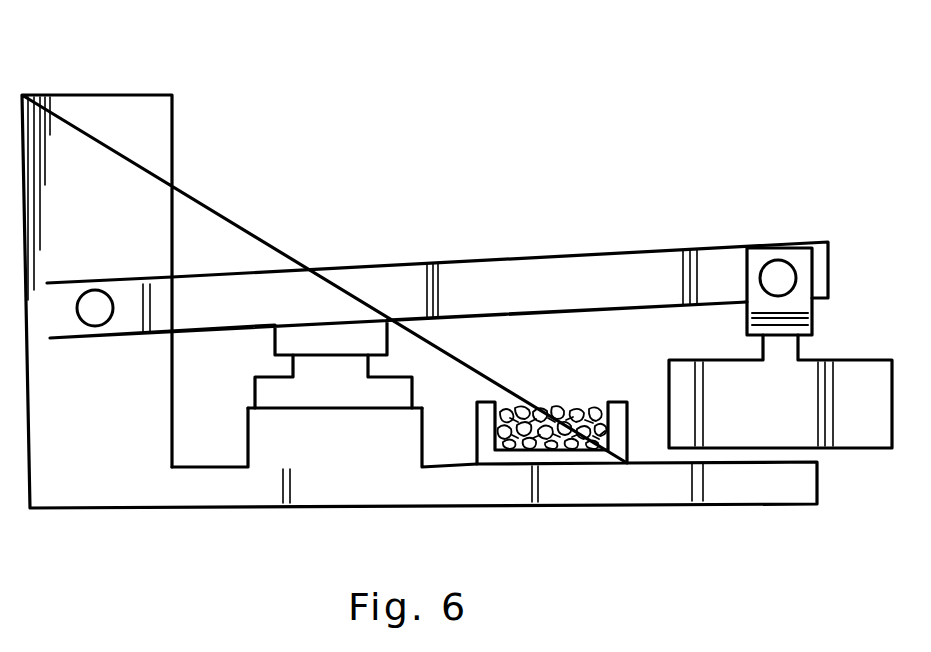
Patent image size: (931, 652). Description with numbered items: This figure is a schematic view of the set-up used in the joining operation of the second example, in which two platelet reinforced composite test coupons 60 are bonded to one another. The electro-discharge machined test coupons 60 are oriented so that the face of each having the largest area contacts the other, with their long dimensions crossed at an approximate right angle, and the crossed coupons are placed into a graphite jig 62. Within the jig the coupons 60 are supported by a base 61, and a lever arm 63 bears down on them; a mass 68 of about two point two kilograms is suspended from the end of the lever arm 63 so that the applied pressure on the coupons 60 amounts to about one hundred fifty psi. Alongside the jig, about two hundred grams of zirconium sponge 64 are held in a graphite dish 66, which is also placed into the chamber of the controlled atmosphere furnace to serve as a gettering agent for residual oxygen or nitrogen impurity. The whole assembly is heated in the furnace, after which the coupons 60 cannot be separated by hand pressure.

The test coupons 60 is at (340, 393).
The base 61 is at (113, 110).
The graphite jig 62 is at (323, 130).
The lever arm 63 is at (198, 293).
The zirconium sponge 64 is at (570, 410).
The graphite dish 66 is at (485, 410).
The mass 68 is at (840, 383).